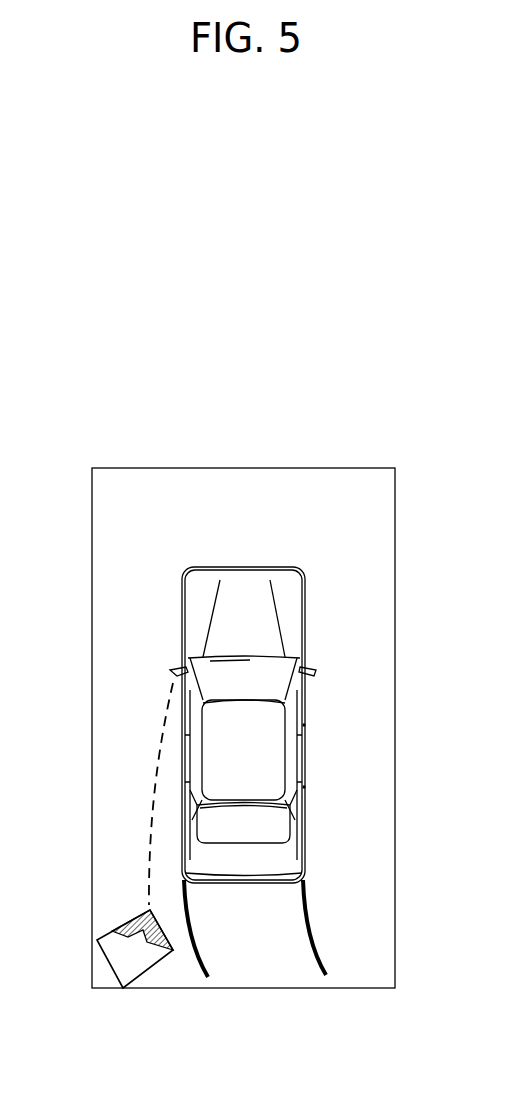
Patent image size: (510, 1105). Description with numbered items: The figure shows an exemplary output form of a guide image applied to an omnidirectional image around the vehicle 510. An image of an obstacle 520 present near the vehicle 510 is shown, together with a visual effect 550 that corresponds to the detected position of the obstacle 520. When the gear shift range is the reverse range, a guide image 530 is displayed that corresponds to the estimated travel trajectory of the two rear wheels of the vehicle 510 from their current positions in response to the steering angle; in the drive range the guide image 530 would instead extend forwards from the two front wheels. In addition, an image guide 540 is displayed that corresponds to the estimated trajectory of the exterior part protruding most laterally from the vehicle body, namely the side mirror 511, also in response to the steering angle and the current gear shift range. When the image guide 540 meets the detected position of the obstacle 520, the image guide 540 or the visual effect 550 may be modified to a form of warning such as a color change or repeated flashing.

The vehicle 510 is at (305, 625).
The side mirror 511 is at (178, 677).
The obstacle 520 is at (105, 957).
The guide image 530 is at (326, 975).
The image guide 540 is at (165, 729).
The visual effect 550 is at (135, 913).